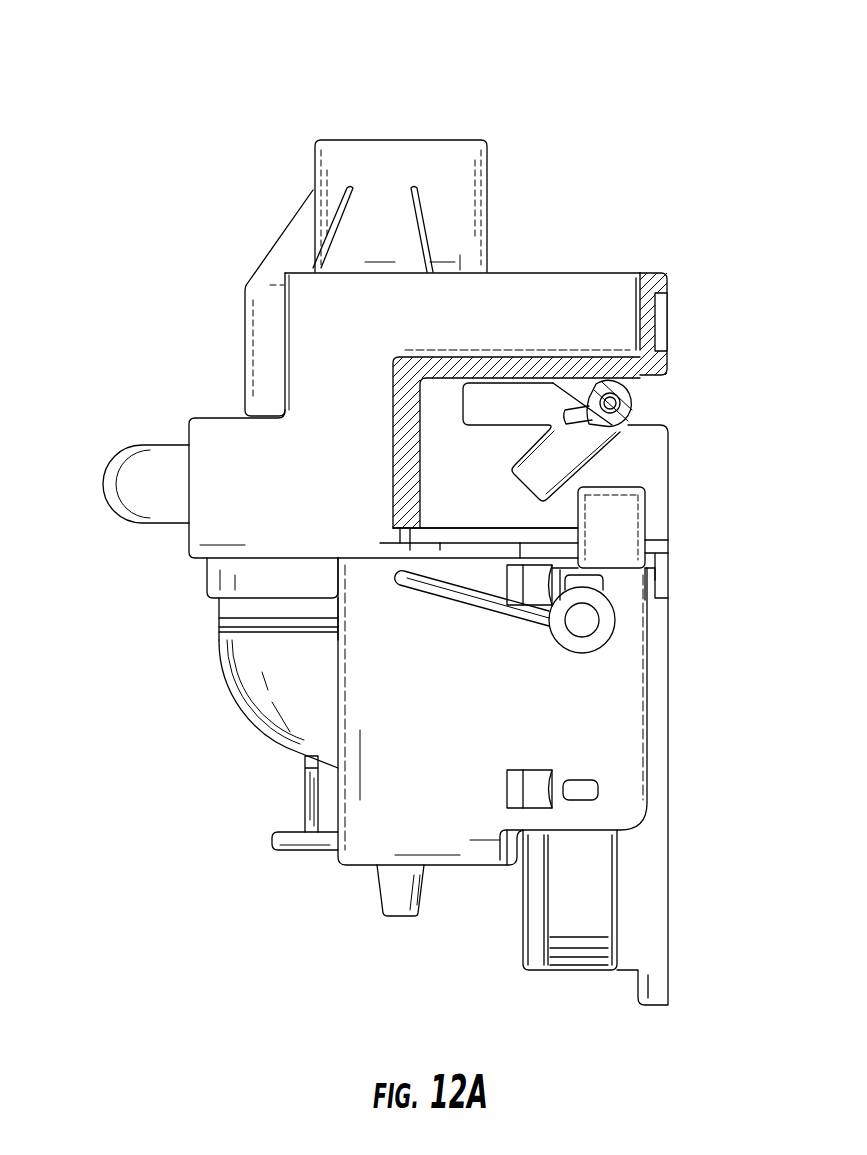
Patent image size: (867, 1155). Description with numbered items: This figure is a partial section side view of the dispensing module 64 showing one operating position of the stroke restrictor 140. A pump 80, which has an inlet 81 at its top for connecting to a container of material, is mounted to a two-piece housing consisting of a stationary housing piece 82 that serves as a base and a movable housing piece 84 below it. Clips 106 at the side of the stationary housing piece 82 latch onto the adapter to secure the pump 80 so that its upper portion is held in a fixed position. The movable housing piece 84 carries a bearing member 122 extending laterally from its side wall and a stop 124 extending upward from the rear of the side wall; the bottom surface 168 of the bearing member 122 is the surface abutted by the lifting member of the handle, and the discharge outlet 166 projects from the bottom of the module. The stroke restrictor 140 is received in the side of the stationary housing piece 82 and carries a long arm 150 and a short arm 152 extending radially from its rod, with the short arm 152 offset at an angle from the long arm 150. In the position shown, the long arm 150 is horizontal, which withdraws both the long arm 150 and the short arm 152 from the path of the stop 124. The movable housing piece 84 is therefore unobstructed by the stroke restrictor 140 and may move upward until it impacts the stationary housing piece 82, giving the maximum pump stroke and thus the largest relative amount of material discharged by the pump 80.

The dispensing module 64 is at (683, 68).
The inlet 81 is at (415, 152).
The stationary housing piece 82 is at (228, 440).
The clips 106 is at (130, 490).
The long arm 150 is at (510, 398).
The short arm 152 is at (530, 470).
The stroke restrictor 140 is at (646, 402).
The stop 124 is at (630, 520).
The bottom surface 168 is at (441, 600).
The bearing member 122 is at (533, 628).
The pump 80 is at (240, 655).
The movable housing piece 84 is at (357, 772).
The discharge outlet 166 is at (393, 893).